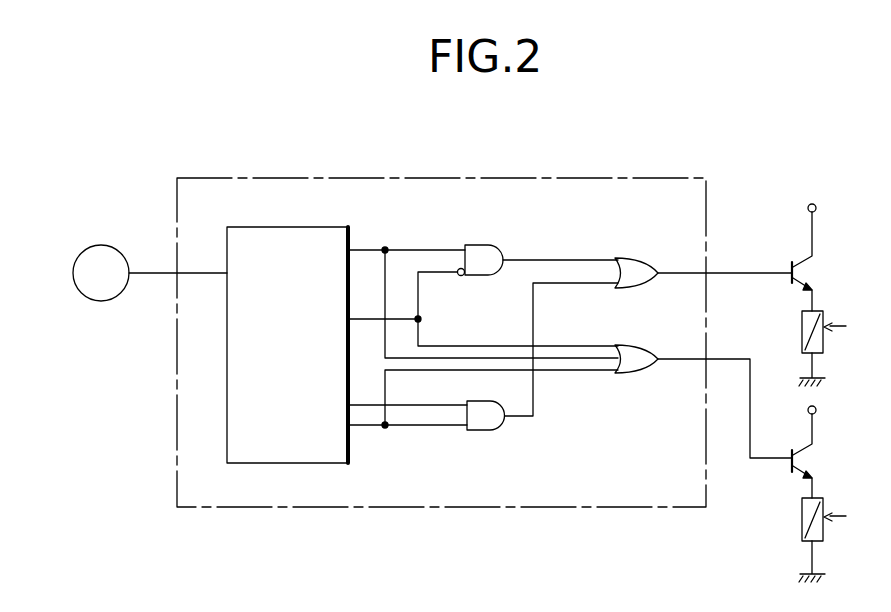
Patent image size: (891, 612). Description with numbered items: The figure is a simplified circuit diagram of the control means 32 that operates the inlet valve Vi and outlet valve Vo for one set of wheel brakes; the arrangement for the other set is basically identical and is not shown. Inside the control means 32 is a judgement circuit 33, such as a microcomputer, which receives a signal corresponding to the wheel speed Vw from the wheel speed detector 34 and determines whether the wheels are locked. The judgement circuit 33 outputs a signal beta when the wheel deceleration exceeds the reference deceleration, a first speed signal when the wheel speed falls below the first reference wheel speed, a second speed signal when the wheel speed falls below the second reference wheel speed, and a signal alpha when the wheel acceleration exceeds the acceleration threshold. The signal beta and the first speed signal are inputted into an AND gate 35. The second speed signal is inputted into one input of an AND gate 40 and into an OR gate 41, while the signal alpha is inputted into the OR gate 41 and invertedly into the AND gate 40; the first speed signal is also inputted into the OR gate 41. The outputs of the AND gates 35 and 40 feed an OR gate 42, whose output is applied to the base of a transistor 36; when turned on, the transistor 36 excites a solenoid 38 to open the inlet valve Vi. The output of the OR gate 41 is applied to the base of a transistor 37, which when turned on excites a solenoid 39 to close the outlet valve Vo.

The control means 32 is at (502, 178).
The judgement circuit 33 is at (282, 465).
The wheel speed detector 34 is at (112, 287).
The AND gate 35 is at (487, 431).
The transistor 36 is at (796, 281).
The transistor 37 is at (796, 469).
The solenoid 38 is at (802, 344).
The solenoid 39 is at (802, 531).
The AND gate 40 is at (489, 241).
The OR gate 41 is at (634, 373).
The OR gate 42 is at (634, 258).